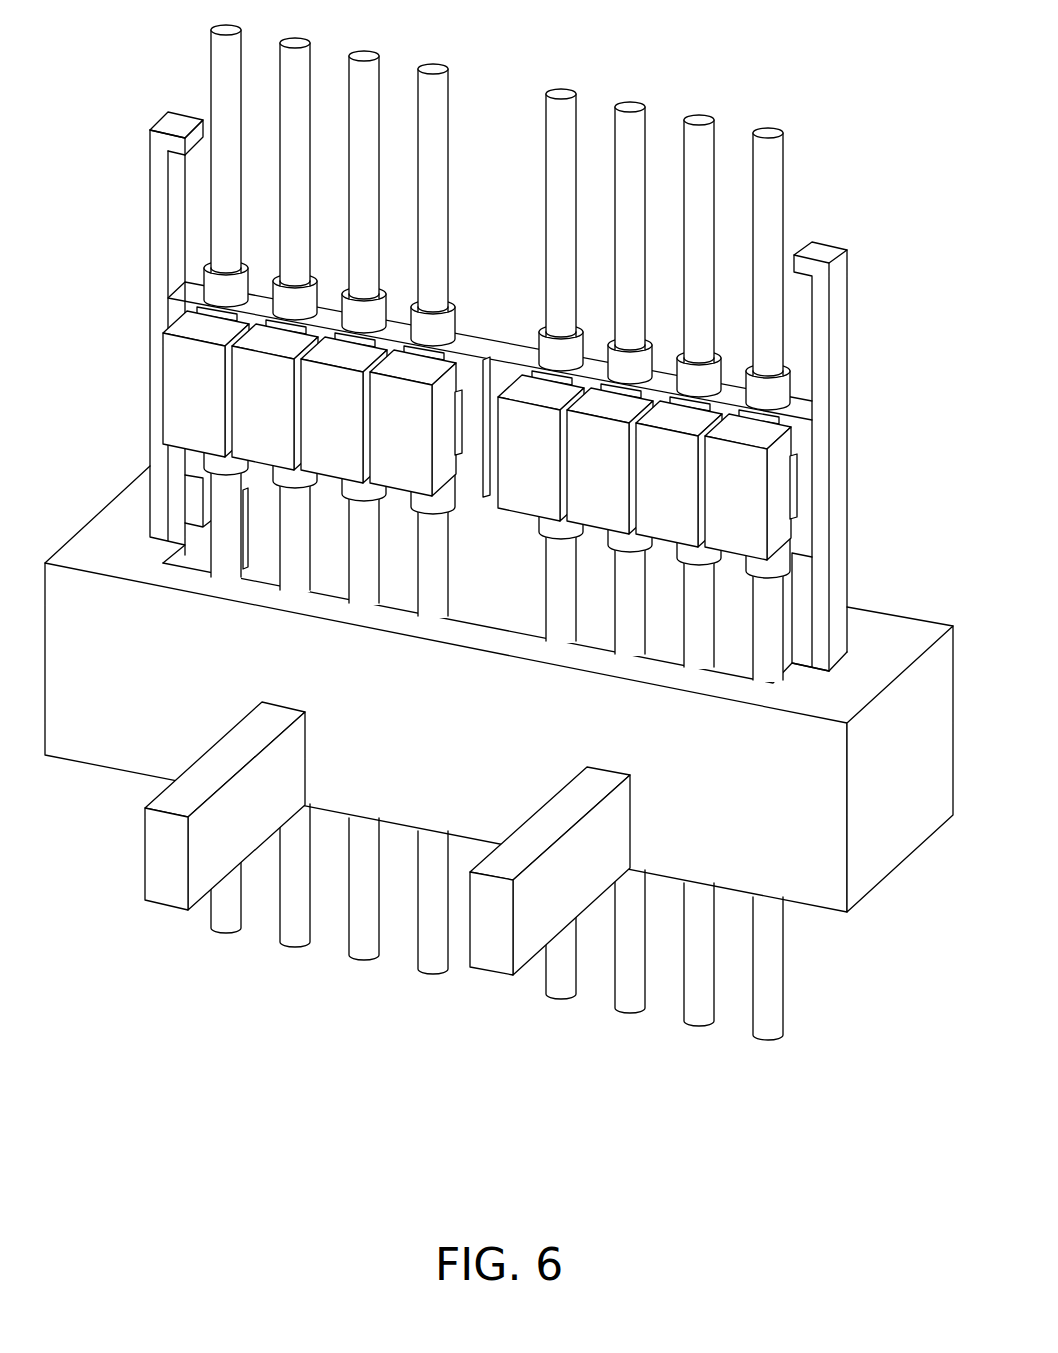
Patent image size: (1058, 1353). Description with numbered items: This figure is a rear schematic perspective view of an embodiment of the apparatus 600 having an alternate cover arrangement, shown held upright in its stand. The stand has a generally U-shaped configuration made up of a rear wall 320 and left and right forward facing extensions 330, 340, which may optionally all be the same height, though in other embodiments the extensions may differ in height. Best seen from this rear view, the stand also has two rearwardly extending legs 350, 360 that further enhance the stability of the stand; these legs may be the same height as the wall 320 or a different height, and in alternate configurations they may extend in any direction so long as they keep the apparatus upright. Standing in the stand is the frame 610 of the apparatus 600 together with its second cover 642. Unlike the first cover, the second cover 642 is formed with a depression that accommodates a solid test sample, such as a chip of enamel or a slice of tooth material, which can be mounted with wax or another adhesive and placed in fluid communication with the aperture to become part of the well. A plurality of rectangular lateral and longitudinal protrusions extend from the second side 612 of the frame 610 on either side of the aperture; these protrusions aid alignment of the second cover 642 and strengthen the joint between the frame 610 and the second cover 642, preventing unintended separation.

The apparatus 600 is at (506, 575).
The frame 610 is at (559, 391).
The second side 612 is at (816, 524).
The second cover 642 is at (759, 506).
The rear wall 320 is at (501, 734).
The left forward facing extension 330 is at (880, 792).
The right forward facing extension 340 is at (112, 556).
The rearwardly extending leg 350 is at (492, 943).
The rearwardly extending leg 360 is at (173, 863).